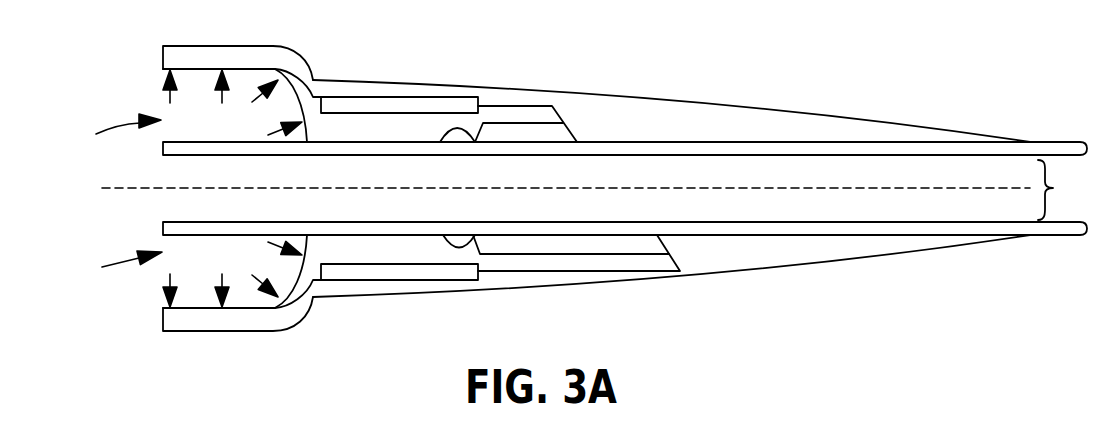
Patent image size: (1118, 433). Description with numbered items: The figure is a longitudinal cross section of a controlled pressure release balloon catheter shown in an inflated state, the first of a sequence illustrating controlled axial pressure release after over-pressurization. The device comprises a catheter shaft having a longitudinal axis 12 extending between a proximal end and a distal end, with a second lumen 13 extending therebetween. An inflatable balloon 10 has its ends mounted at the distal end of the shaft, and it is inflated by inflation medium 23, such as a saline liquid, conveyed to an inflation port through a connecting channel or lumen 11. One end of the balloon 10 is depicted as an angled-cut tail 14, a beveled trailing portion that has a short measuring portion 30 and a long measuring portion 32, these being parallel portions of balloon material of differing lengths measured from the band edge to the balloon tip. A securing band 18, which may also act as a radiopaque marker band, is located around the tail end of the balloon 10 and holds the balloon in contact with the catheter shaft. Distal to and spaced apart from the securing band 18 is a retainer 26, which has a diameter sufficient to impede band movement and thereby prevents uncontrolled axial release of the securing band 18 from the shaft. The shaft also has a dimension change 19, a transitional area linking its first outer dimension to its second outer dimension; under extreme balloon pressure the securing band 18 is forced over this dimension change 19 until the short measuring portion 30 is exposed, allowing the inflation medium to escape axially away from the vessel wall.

The balloon 10 is at (233, 56).
The connecting channel or lumen 11 is at (115, 198).
The longitudinal axis 12 is at (552, 190).
The second lumen 13 is at (1062, 190).
The angled-cut tail 14 is at (572, 128).
The securing band 18 is at (441, 105).
The catheter shaft dimension change 19 is at (445, 233).
The inflation medium 23 is at (232, 188).
The retainer 26 is at (643, 118).
The short measuring portion 30 is at (553, 121).
The long measuring portion 32 is at (663, 265).